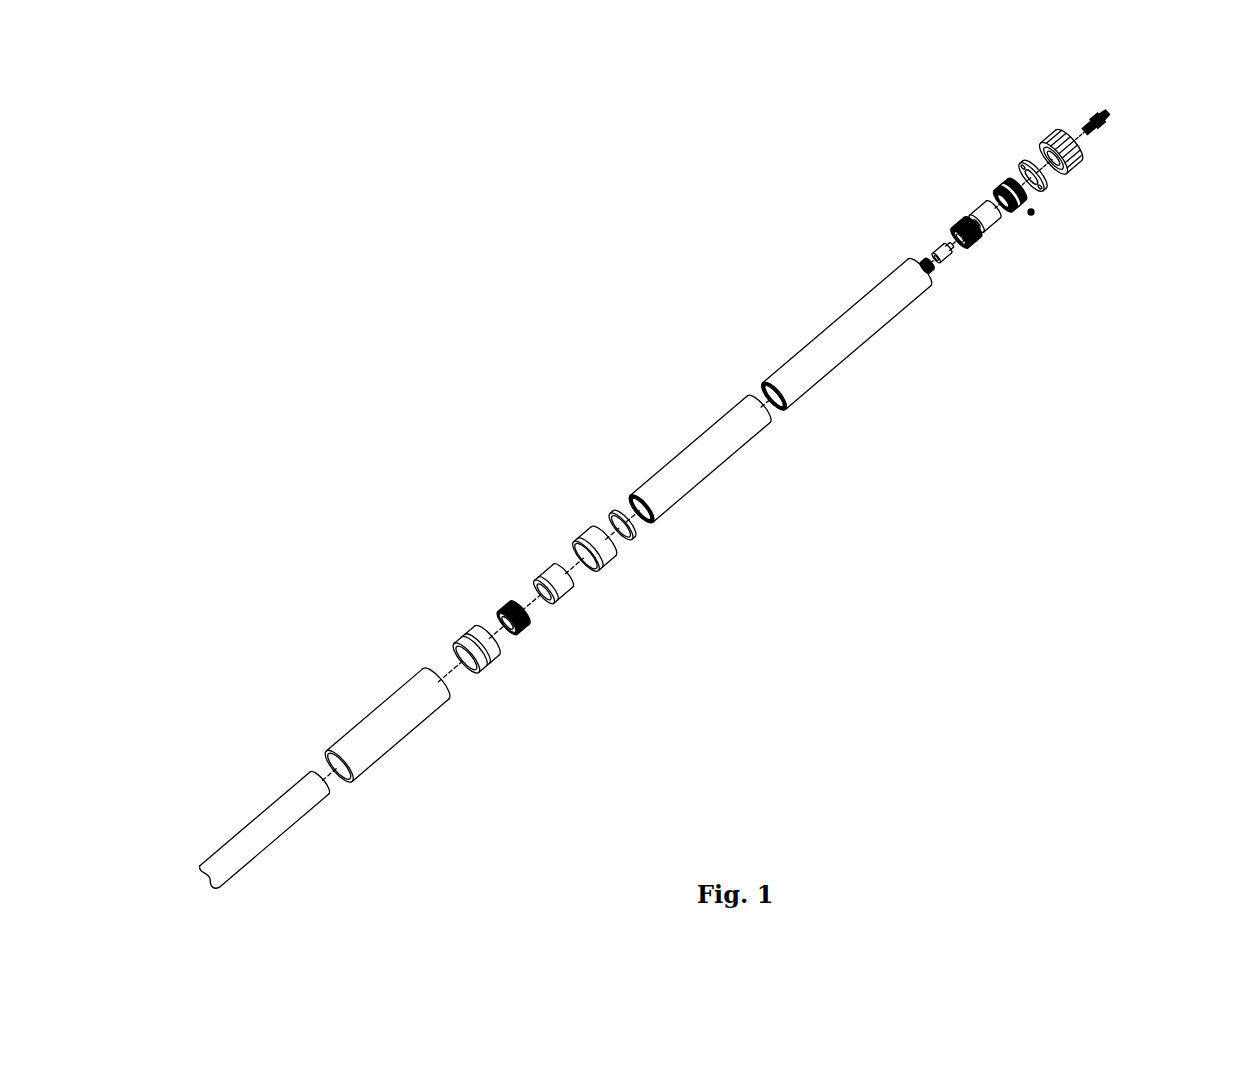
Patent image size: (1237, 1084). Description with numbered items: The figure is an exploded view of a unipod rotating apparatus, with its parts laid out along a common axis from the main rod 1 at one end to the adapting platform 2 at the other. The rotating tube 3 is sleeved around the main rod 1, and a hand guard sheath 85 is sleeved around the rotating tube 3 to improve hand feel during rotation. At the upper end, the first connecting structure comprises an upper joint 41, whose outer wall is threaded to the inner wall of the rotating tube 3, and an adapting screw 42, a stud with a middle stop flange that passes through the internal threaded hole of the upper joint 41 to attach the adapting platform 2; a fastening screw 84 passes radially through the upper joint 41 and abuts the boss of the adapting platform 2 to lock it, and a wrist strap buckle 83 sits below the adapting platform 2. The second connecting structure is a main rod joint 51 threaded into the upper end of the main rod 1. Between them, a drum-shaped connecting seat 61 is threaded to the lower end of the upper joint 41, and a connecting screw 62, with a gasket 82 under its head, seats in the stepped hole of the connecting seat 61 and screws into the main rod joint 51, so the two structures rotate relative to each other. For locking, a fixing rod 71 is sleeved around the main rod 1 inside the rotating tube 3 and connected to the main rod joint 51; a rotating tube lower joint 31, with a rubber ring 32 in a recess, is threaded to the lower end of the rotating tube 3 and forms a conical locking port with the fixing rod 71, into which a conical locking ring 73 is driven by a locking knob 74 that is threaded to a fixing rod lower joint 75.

The main rod 1 is at (252, 835).
The adapting platform 2 is at (1078, 167).
The rotating tube 3 is at (698, 467).
The rotating tube lower joint 31 is at (613, 557).
The rubber ring 32 is at (610, 512).
The upper joint 41 is at (1008, 180).
The adapting screw 42 is at (1097, 137).
The main rod joint 51 is at (958, 218).
The connecting seat 61 is at (975, 207).
The connecting screw 62 is at (935, 252).
The fixing rod 71 is at (843, 348).
The locking ring 73 is at (565, 595).
The locking knob 74 is at (487, 660).
The fixing rod lower joint 75 is at (508, 602).
The gasket 82 is at (923, 262).
The wrist strap buckle 83 is at (1050, 187).
The fastening screw 84 is at (1032, 215).
The hand guard sheath 85 is at (390, 717).